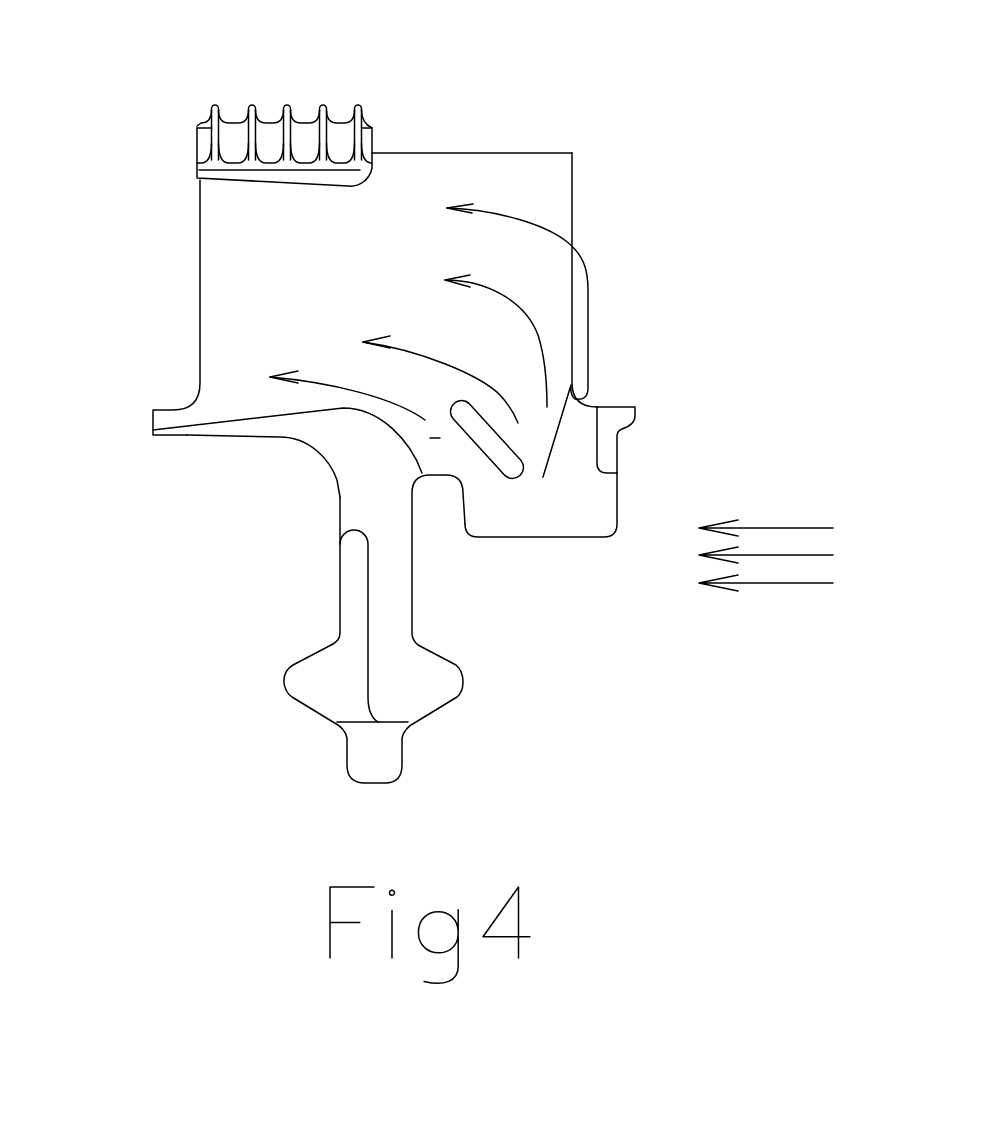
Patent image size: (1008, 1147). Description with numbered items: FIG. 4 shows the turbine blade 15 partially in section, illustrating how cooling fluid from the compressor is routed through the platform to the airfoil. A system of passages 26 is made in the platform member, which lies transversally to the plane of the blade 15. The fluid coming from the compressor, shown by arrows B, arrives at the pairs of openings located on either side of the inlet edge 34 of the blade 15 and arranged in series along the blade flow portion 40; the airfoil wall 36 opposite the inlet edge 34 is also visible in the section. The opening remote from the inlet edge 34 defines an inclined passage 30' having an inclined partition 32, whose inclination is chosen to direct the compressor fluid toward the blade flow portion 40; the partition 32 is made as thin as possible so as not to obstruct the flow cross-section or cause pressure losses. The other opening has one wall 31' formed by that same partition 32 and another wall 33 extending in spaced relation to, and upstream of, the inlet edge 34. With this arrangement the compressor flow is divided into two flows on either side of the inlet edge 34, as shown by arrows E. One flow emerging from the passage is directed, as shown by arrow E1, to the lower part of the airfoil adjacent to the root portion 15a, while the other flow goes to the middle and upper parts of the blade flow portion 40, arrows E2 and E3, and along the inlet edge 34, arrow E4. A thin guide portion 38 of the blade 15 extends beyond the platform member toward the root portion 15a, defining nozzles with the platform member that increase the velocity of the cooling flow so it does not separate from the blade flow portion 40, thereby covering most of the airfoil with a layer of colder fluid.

The blade 15 is at (384, 96).
The root portion 15a is at (284, 629).
The system of passages 26 is at (573, 584).
The inclined passage 30' is at (296, 468).
The wall 31' is at (629, 357).
The inclined partition 32 is at (501, 562).
The wall 33 is at (695, 426).
The inlet edge 34 is at (631, 244).
The leading edge wall 36 is at (118, 264).
The guide portion 38 is at (618, 576).
The blade flow portion 40 is at (317, 241).
The flow of fluid from compressor E is at (517, 340).
The flow to lower part of airfoil E1 is at (335, 370).
The flow to middle part of blade flow portion E2 is at (420, 352).
The flow to upper part of blade flow portion E3 is at (466, 312).
The flow along inlet edge E4 is at (438, 179).
The fluid coming from compressor B is at (816, 565).